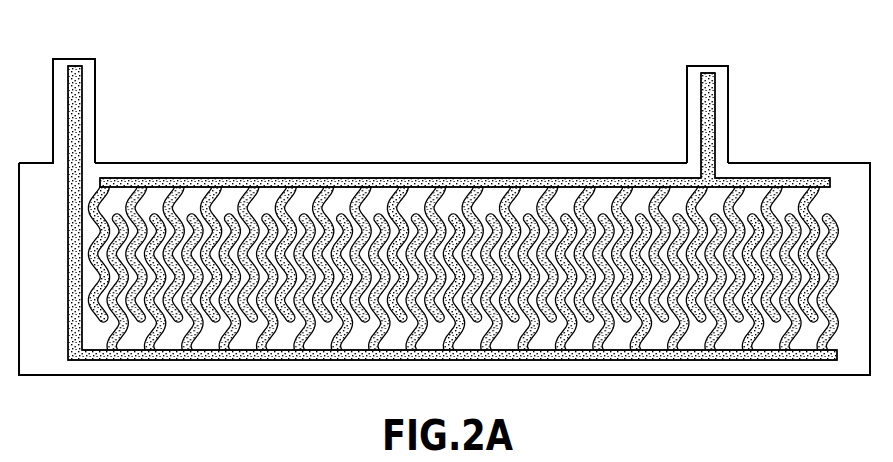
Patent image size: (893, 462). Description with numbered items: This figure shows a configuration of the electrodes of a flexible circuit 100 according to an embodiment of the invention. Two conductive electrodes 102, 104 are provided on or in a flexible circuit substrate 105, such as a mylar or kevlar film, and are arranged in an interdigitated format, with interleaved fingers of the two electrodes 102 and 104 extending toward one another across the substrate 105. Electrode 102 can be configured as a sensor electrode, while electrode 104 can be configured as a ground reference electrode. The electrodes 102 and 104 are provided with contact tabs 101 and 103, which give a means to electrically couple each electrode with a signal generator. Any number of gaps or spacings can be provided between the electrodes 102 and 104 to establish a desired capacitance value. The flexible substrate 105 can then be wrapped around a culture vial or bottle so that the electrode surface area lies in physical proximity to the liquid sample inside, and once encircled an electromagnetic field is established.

The flexible circuit 100 is at (433, 78).
The contact tab 101 is at (96, 113).
The sensor electrode 102 is at (716, 142).
The contact tab 103 is at (687, 117).
The ground reference electrode 104 is at (79, 130).
The flexible circuit substrate 105 is at (320, 163).